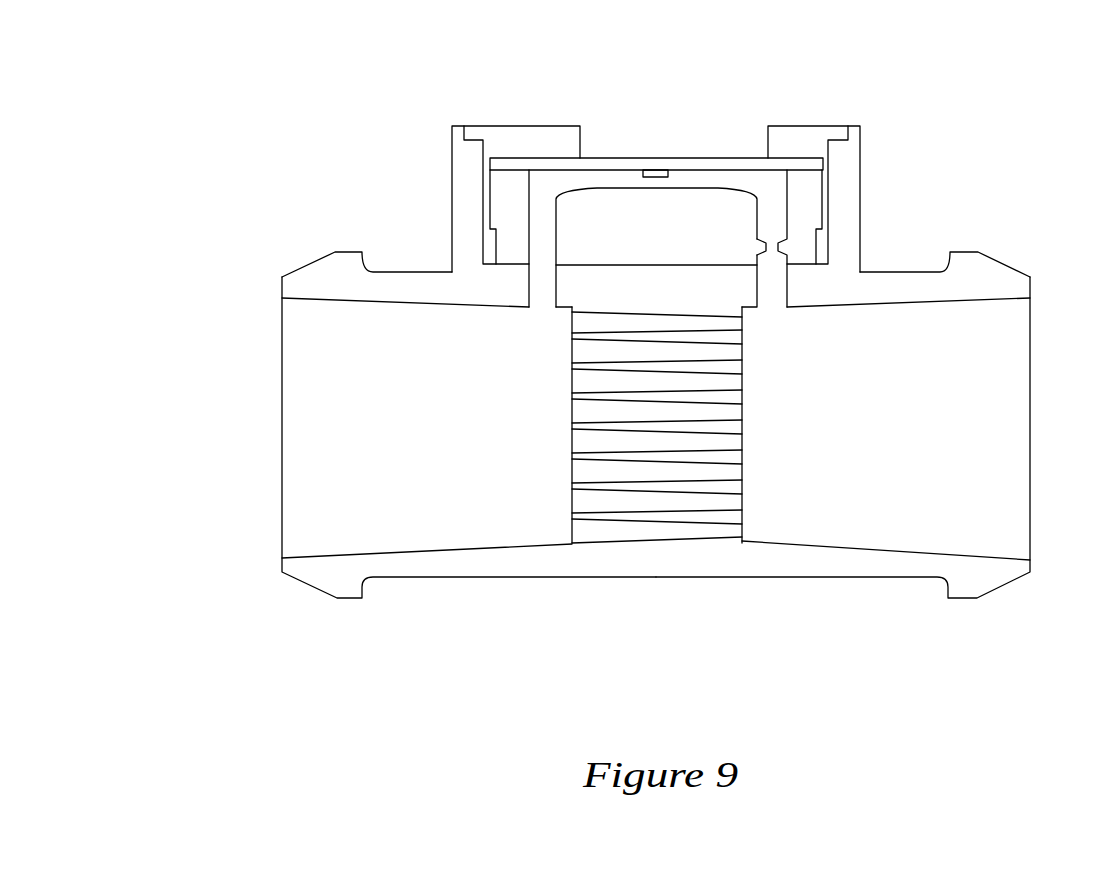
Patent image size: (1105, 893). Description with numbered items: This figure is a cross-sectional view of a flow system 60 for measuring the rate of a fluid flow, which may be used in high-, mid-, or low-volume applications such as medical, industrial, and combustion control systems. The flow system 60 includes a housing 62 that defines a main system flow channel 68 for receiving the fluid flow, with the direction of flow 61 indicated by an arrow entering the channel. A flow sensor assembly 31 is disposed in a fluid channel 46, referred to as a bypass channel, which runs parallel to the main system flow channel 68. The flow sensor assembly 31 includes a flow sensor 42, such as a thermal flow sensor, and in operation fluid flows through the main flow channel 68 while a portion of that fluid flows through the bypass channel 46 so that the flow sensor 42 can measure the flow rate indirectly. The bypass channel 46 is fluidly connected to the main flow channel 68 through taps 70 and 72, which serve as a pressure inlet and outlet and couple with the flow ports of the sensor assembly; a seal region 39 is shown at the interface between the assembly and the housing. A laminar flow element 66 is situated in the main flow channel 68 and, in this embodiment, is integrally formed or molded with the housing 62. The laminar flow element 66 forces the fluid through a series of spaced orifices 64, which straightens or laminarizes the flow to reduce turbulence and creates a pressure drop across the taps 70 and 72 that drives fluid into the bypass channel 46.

The flow system 60 is at (630, 337).
The flow sensor assembly 31 is at (686, 188).
The flow sensor 42 is at (653, 170).
The fluid channel 46 is at (710, 180).
The seal 39 is at (787, 246).
The tap 70 is at (542, 285).
The tap 72 is at (777, 288).
The housing 62 is at (330, 275).
The main system flow channel 68 is at (1006, 330).
The flow direction 61 is at (211, 405).
The orifices 64 is at (572, 513).
The laminar flow element 66 is at (572, 470).